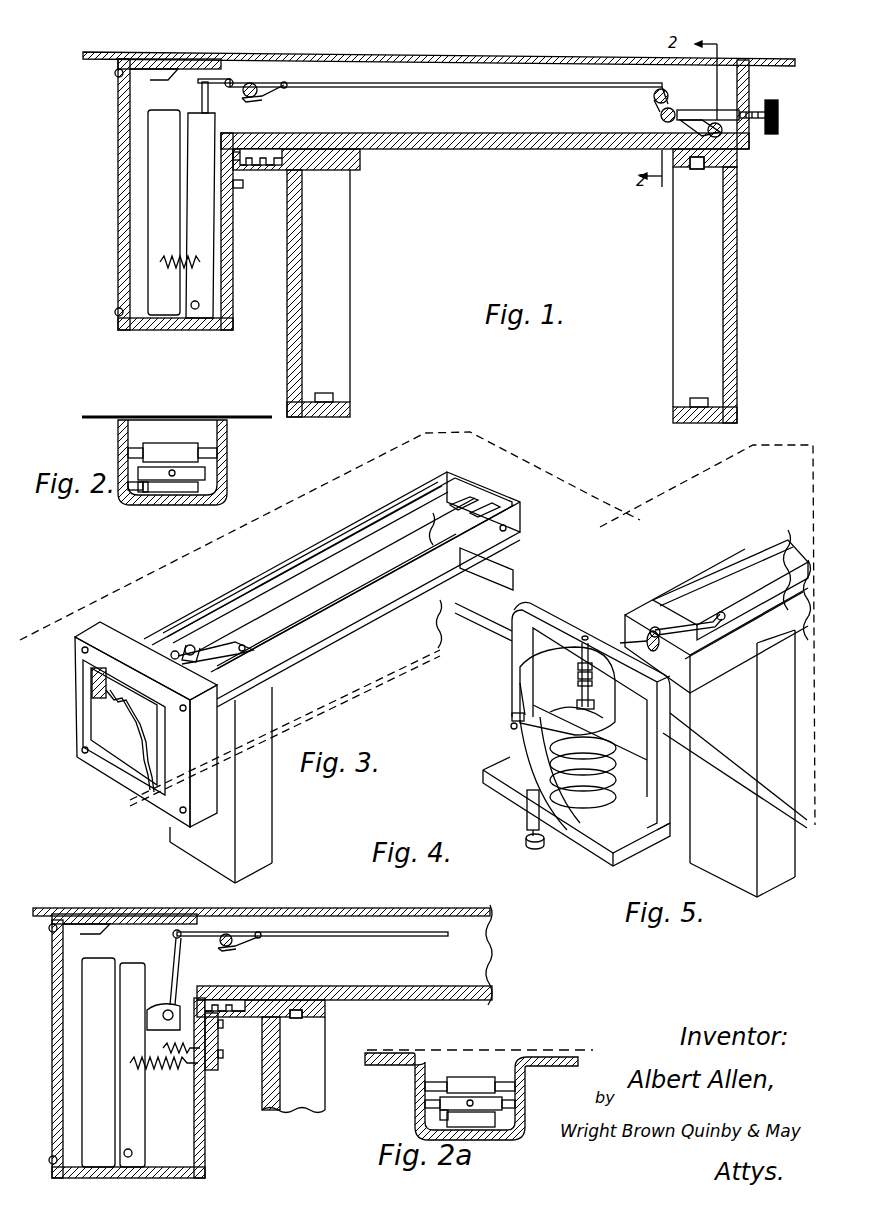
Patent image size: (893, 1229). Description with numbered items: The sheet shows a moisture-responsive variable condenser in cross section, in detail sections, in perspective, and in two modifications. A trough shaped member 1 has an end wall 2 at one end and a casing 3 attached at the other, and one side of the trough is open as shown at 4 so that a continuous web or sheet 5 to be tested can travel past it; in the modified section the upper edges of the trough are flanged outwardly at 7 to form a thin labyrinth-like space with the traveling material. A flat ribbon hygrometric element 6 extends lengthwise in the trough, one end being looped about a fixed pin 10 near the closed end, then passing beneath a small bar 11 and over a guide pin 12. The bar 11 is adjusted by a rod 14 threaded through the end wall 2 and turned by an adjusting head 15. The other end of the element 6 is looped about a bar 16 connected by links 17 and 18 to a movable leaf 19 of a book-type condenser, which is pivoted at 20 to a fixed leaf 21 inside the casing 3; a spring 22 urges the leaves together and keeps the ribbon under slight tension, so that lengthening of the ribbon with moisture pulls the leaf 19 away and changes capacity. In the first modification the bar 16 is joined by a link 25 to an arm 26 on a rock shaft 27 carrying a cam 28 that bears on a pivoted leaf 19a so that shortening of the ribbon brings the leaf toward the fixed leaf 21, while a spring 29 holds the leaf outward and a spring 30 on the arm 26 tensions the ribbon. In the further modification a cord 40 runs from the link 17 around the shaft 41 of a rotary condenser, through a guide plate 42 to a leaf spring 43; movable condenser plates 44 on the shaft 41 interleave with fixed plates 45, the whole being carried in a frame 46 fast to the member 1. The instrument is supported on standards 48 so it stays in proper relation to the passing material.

In FIG. 1, the trough shaped member 1 is at (508, 150).
In FIG. 2, the trough shaped member 1 is at (227, 441).
In FIG. 3, the trough shaped member 1 is at (390, 600).
In FIG. 5, the trough shaped member 1 is at (773, 708).
In FIG. 4, the trough shaped member 1 is at (473, 950).
In FIG. 2A, the trough shaped member 1 is at (527, 1093).
In FIG. 1, the end wall 2 is at (750, 80).
In FIG. 3, the end wall 2 is at (465, 470).
In FIG. 1, the casing 3 is at (234, 262).
In FIG. 3, the casing 3 is at (127, 793).
In FIG. 4, the casing 3 is at (127, 1046).
In FIG. 2, the open side 4 is at (158, 432).
In FIG. 3, the open side 4 is at (292, 570).
In FIG. 2A, the open side 4 is at (508, 1060).
In FIG. 1, the web or sheet 5 is at (487, 53).
In FIG. 2, the web or sheet 5 is at (110, 418).
In FIG. 3, the web or sheet 5 is at (336, 480).
In FIG. 5, the web or sheet 5 is at (663, 497).
In FIG. 4, the web or sheet 5 is at (455, 892).
In FIG. 2A, the web or sheet 5 is at (450, 1050).
In FIG. 1, the hygrometric element 6 is at (540, 83).
In FIG. 2, the hygrometric element 6 is at (183, 443).
In FIG. 3, the hygrometric element 6 is at (368, 540).
In FIG. 5, the hygrometric element 6 is at (770, 560).
In FIG. 4, the hygrometric element 6 is at (357, 932).
In FIG. 2A, the hygrometric element 6 is at (470, 1077).
In FIG. 2A, the outwardly flanged upper edges 7 is at (570, 1057).
In FIG. 1, the fixed pin 10 is at (735, 128).
In FIG. 2, the fixed pin 10 is at (200, 503).
In FIG. 3, the fixed pin 10 is at (513, 537).
In FIG. 2A, the fixed pin 10 is at (520, 1127).
In FIG. 1, the bar 11 is at (706, 110).
In FIG. 2, the bar 11 is at (220, 475).
In FIG. 2A, the bar 11 is at (533, 1110).
In FIG. 1, the guide pin 12 is at (654, 98).
In FIG. 2, the guide pin 12 is at (127, 493).
In FIG. 3, the guide pin 12 is at (470, 485).
In FIG. 2A, the guide pin 12 is at (417, 1093).
In FIG. 1, the rod 14 is at (707, 118).
In FIG. 2, the rod 14 is at (160, 507).
In FIG. 3, the rod 14 is at (490, 505).
In FIG. 2A, the rod 14 is at (437, 1110).
In FIG. 1, the adjusting head 15 is at (779, 112).
In FIG. 1, the bar 16 is at (288, 82).
In FIG. 3, the bar 16 is at (254, 652).
In FIG. 5, the bar 16 is at (725, 624).
In FIG. 4, the bar 16 is at (236, 937).
In FIG. 1, the link 17 is at (254, 83).
In FIG. 3, the link 17 is at (191, 645).
In FIG. 5, the link 17 is at (658, 627).
In FIG. 1, the link 18 is at (231, 78).
In FIG. 3, the link 18 is at (176, 650).
In FIG. 1, the movable leaf 19 is at (200, 112).
In FIG. 3, the movable leaf 19 is at (90, 685).
In FIG. 4, the pivoted leaf 19a is at (123, 1037).
In FIG. 1, the pivot 20 is at (195, 312).
In FIG. 1, the fixed leaf 21 is at (163, 178).
In FIG. 3, the fixed leaf 21 is at (130, 712).
In FIG. 4, the fixed leaf 21 is at (87, 1003).
In FIG. 1, the spring 22 is at (160, 262).
In FIG. 4, the link 25 is at (205, 930).
In FIG. 4, the arm 26 is at (182, 964).
In FIG. 4, the rock shaft 27 is at (217, 1027).
In FIG. 4, the cam 28 is at (150, 1006).
In FIG. 4, the spring 29 is at (163, 1070).
In FIG. 4, the spring 30 is at (207, 1057).
In FIG. 5, the cord 40 is at (650, 631).
In FIG. 5, the shaft 41 is at (586, 636).
In FIG. 5, the guide plate 42 is at (510, 700).
In FIG. 5, the leaf spring 43 is at (525, 737).
In FIG. 5, the movable condenser plates 44 is at (590, 800).
In FIG. 5, the fixed plates 45 is at (655, 833).
In FIG. 5, the frame 46 is at (618, 862).
In FIG. 1, the standards 48 is at (350, 282).
In FIG. 3, the standards 48 is at (262, 822).
In FIG. 5, the standards 48 is at (778, 880).
In FIG. 4, the standards 48 is at (305, 1052).